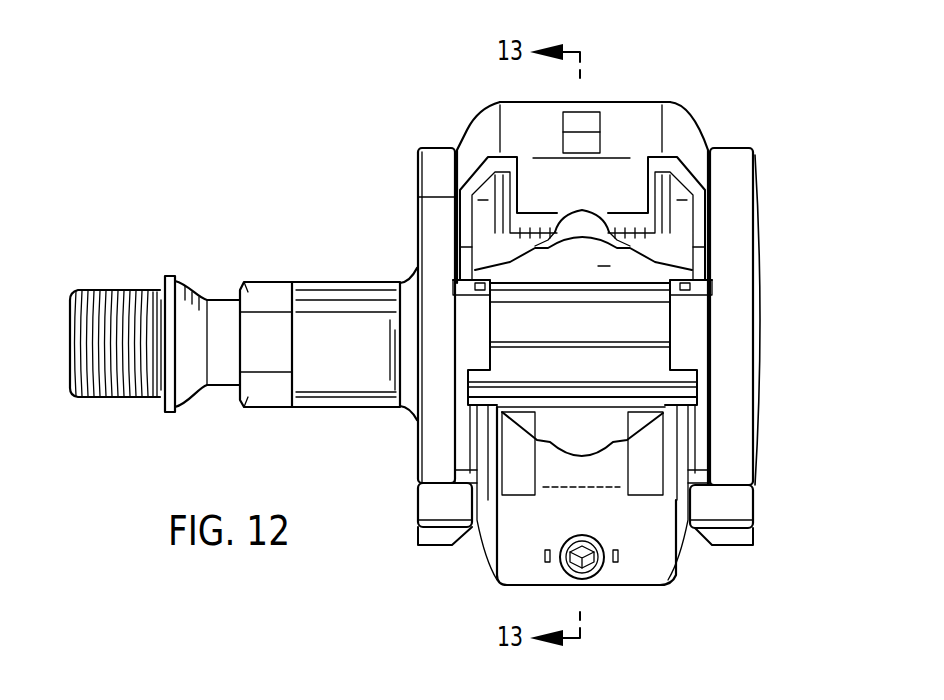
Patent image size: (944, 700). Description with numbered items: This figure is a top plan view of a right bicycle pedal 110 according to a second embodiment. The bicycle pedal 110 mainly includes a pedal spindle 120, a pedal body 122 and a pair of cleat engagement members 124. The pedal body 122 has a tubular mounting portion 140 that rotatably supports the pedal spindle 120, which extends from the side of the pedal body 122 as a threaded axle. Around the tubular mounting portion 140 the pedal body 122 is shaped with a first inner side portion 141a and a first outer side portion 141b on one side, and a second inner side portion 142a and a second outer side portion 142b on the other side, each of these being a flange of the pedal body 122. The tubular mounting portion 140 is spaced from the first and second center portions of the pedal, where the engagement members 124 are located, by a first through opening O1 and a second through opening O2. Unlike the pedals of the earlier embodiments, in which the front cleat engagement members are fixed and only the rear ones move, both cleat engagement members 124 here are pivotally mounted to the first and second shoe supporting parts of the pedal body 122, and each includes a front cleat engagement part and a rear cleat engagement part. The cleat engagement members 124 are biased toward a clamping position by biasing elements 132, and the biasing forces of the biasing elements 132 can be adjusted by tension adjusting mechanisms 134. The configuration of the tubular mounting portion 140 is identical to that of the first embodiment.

The bicycle pedal 110 is at (713, 82).
The pedal spindle 120 is at (204, 288).
The pedal body 122 is at (770, 320).
The cleat engagement member 124 is at (642, 100).
The biasing element 132 is at (668, 196).
The tension adjusting mechanism 134 is at (610, 592).
The tubular mounting portion 140 is at (515, 318).
The first inner side portion 141a is at (445, 162).
The first outer side portion 141b is at (730, 162).
The second inner side portion 142a is at (437, 540).
The second outer side portion 142b is at (733, 538).
The first through opening O1 is at (612, 274).
The second through opening O2 is at (622, 412).